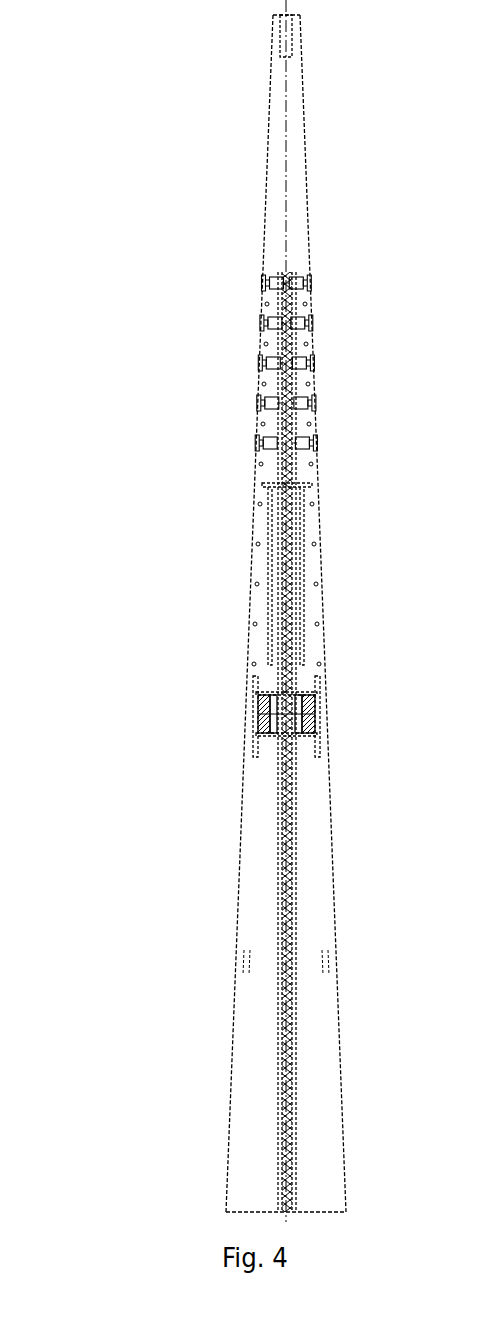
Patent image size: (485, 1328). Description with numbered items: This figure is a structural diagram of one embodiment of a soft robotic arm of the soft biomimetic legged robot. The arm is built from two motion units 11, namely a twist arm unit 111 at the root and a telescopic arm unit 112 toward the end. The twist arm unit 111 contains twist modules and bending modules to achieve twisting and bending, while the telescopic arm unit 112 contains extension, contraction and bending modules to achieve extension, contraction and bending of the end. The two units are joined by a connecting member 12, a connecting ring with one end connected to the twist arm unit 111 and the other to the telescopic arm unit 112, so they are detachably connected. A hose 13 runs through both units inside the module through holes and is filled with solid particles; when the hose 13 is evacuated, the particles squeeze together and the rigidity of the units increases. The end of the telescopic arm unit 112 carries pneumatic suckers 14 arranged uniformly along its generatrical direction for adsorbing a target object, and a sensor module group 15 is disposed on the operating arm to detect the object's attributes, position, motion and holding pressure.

The motion unit 11 is at (130, 606).
The twist arm unit 111 is at (243, 790).
The telescopic arm unit 112 is at (248, 656).
The connecting member 12 is at (305, 712).
The hose 13 is at (291, 999).
The pneumatic sucker 14 is at (319, 362).
The sensor module group 15 is at (291, 40).